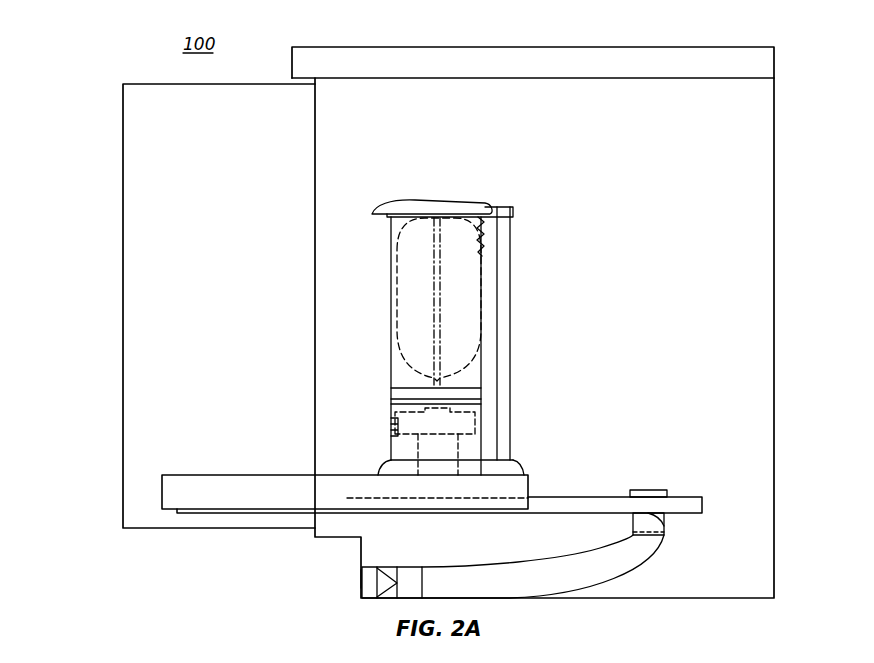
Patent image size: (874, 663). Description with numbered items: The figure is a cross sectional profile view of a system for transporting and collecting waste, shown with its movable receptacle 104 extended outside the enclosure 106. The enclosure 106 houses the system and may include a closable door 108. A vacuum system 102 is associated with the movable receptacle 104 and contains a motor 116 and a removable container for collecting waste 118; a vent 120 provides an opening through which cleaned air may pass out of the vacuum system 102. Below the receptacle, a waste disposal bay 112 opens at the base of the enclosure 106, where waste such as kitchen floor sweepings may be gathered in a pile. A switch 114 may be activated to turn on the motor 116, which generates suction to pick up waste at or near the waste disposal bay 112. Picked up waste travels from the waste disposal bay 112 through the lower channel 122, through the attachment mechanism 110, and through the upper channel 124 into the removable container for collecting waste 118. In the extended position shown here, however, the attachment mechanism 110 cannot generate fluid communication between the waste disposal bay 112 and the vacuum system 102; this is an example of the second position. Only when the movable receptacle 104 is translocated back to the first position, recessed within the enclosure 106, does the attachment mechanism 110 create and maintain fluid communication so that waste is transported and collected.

The vacuum system 102 is at (397, 360).
The movable receptacle 104 is at (218, 470).
The enclosure 106 is at (665, 40).
The closable door 108 is at (112, 198).
The attachment mechanism 110 is at (650, 522).
The waste disposal bay 112 is at (358, 596).
The switch 114 is at (358, 578).
The motor 116 is at (462, 423).
The removable container for collecting waste 118 is at (460, 277).
The vent 120 is at (390, 428).
The lower channel 122 is at (640, 566).
The upper channel 124 is at (497, 340).